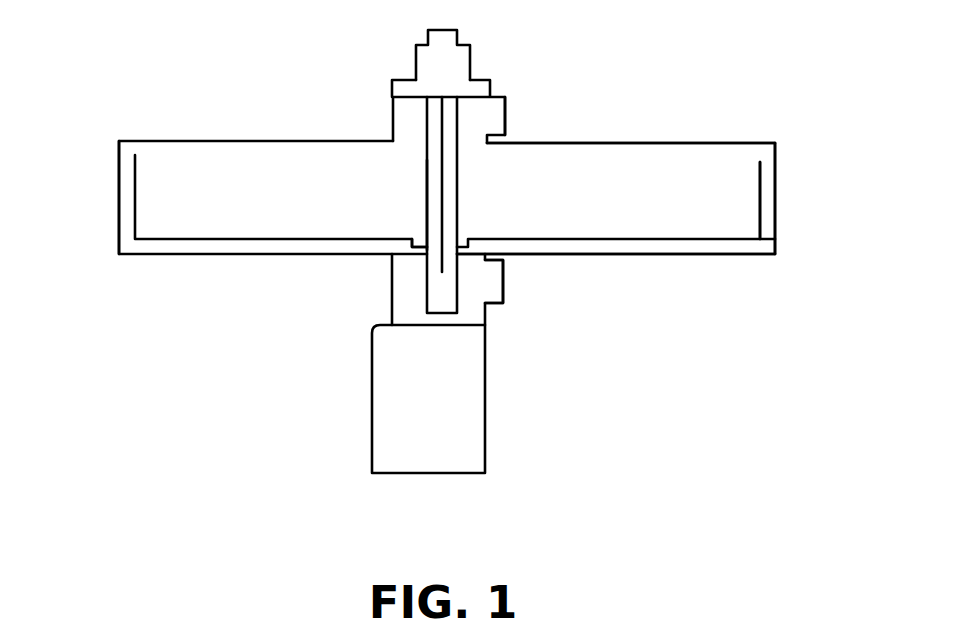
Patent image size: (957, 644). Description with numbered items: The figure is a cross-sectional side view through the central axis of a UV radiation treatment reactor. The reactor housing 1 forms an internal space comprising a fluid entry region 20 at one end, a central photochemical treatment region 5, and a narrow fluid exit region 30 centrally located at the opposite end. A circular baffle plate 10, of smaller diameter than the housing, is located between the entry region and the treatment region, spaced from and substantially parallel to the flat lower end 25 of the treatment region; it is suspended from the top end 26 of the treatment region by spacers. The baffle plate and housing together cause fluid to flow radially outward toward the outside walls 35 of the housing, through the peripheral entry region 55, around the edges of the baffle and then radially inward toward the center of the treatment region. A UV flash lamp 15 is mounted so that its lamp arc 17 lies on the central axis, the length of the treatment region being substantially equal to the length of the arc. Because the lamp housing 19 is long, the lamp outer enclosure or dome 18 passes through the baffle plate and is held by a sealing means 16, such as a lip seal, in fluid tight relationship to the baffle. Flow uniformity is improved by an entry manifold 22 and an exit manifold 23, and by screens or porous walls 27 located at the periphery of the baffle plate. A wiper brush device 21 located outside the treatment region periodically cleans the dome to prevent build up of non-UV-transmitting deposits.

The reactor housing 1 is at (118, 150).
The central photochemical treatment region 5 is at (163, 195).
The baffle plate 10 is at (208, 240).
The UV flash lamp 15 is at (432, 187).
The sealing means 16 is at (412, 250).
The lamp arc 17 is at (440, 153).
The lamp outer enclosure or dome 18 is at (458, 198).
The lamp housing 19 is at (425, 62).
The fluid entry region 20 is at (489, 283).
The wiper brush device 21 is at (397, 408).
The entry manifold 22 is at (402, 317).
The exit manifold 23 is at (407, 122).
The lower end of the treatment region 25 is at (673, 255).
The top end of the treatment region 26 is at (677, 143).
The screens or porous walls 27 is at (770, 175).
The fluid exit region 30 is at (503, 115).
The outside walls of the housing 35 is at (777, 235).
The peripheral entry region 55 is at (773, 207).